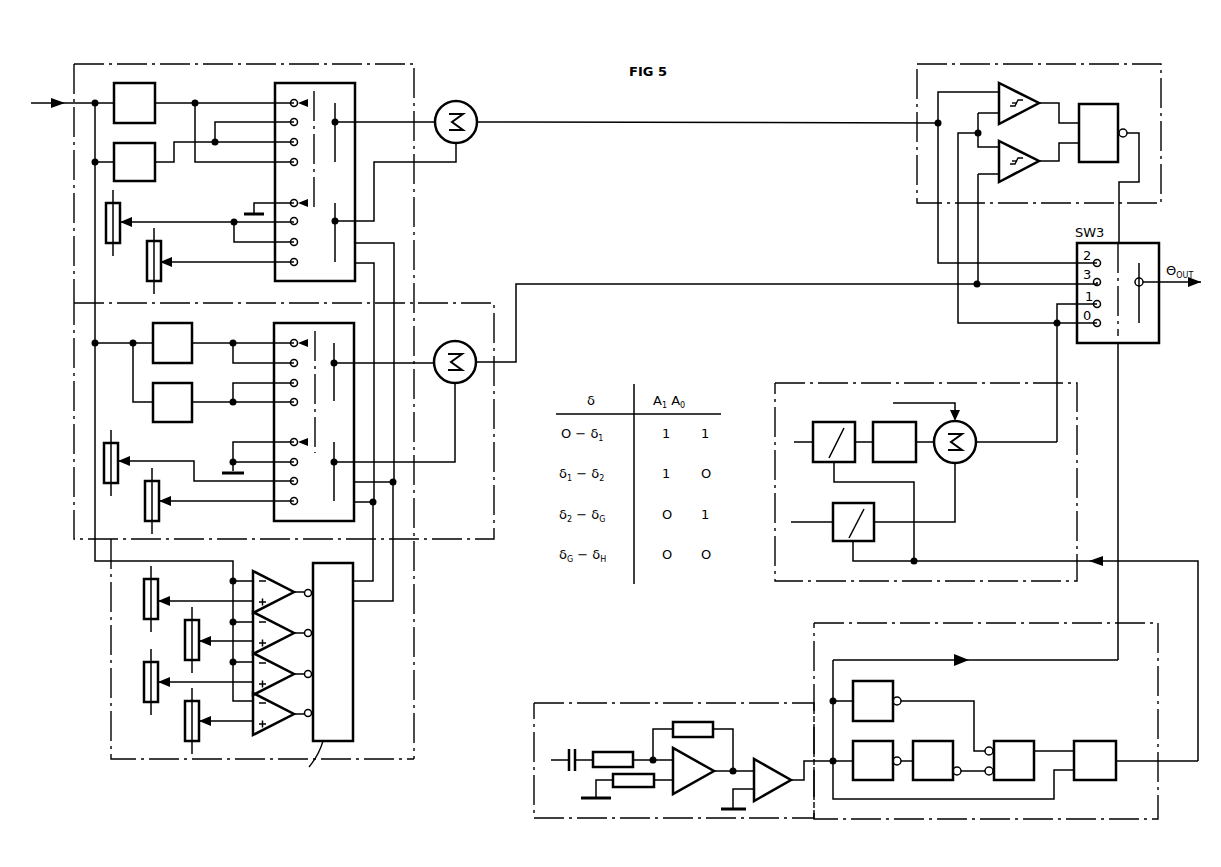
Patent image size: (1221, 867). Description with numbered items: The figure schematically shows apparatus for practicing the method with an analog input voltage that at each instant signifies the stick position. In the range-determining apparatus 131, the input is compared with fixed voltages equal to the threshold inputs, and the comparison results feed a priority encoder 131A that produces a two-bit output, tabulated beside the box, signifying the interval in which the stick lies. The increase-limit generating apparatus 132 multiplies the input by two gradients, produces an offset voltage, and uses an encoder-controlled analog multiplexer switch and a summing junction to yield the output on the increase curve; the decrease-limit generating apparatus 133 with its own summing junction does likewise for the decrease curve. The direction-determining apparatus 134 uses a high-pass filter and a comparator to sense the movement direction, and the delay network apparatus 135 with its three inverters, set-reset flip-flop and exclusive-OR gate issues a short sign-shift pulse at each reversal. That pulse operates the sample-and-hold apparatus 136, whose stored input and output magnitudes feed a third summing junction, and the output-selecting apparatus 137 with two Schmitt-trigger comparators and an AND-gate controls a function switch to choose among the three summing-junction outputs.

The range-determining apparatus 131 is at (413, 632).
The priority encoder 131A is at (353, 682).
The increase-limit generating apparatus 132 is at (451, 299).
The decrease-limit generating apparatus 133 is at (413, 226).
The direction-determining apparatus 134 is at (625, 702).
The delay network apparatus 135 is at (884, 622).
The sample-and-hold apparatus 136 is at (830, 382).
The output-selecting apparatus 137 is at (1160, 137).